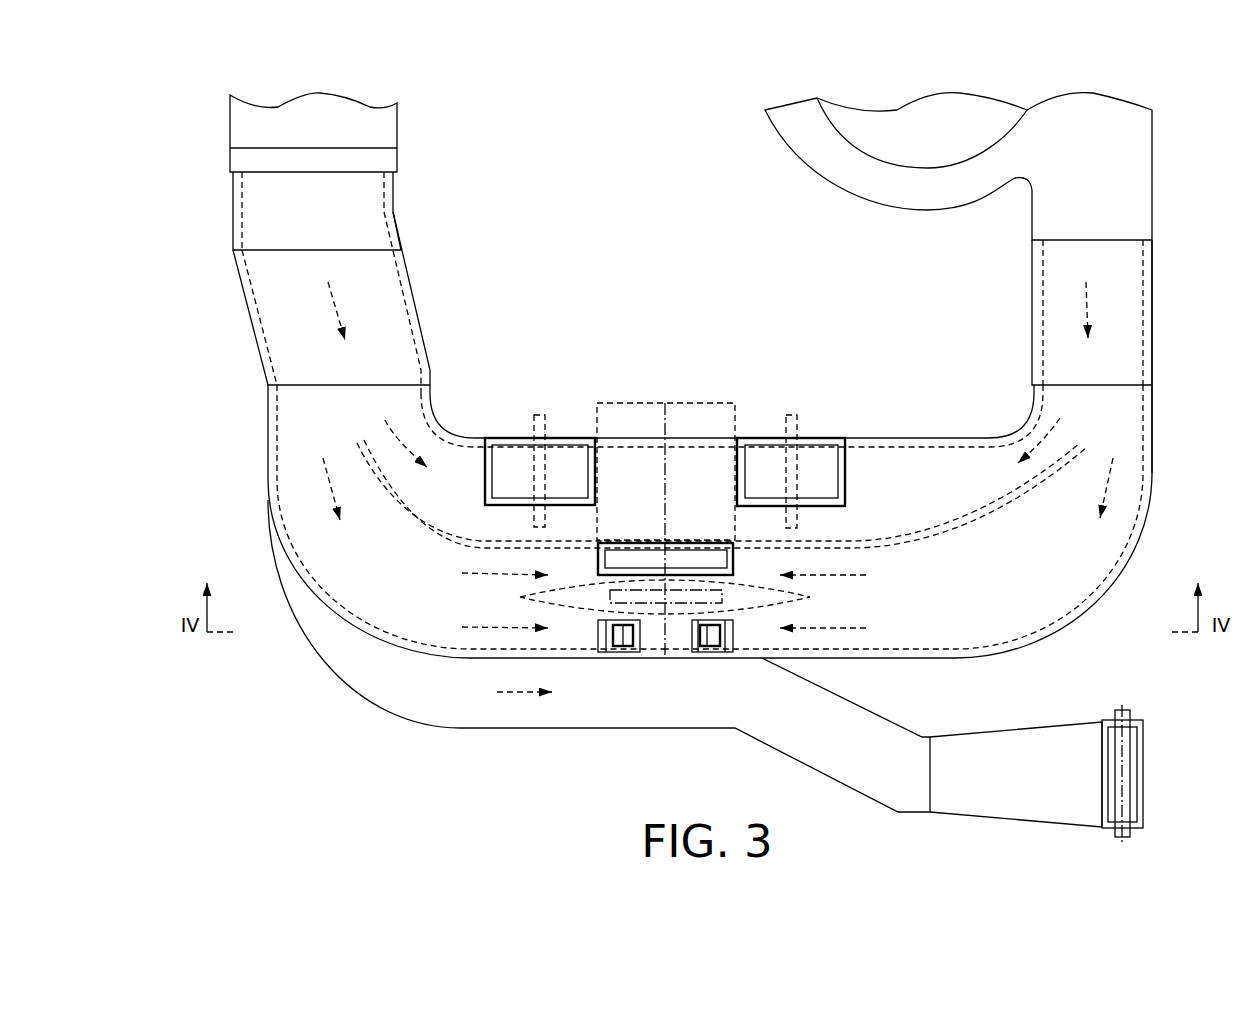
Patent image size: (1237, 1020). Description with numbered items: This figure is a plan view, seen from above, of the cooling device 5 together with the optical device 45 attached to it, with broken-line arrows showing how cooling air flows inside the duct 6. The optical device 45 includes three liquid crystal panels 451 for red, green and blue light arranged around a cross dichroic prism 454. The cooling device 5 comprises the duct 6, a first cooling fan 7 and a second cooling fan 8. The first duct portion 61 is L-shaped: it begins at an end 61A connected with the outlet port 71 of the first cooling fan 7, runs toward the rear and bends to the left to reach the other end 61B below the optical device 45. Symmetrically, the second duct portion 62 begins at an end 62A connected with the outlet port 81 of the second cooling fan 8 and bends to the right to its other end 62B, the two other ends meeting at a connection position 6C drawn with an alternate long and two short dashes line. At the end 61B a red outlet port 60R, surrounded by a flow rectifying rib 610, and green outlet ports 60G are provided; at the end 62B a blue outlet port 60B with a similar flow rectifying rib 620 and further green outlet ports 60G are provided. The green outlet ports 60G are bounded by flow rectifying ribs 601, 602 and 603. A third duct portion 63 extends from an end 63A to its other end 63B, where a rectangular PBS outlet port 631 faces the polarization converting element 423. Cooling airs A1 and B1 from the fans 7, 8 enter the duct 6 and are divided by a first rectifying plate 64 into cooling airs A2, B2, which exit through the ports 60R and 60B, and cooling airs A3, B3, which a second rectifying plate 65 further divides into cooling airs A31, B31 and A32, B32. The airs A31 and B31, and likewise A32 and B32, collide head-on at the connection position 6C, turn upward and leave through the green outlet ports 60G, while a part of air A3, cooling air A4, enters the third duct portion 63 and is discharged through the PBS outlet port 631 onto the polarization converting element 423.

The cooling device 5 is at (638, 140).
The duct 6 is at (450, 735).
The first cooling fan 7 is at (382, 125).
The second cooling fan 8 is at (1137, 122).
The optical device 45 is at (717, 357).
The liquid crystal panels 451 is at (805, 378).
The cross dichroic prism 454 is at (657, 410).
The first duct portion 61 is at (268, 451).
The end 61A is at (388, 203).
The end 61B is at (643, 653).
The second duct portion 62 is at (1128, 547).
The end 62A is at (1148, 242).
The end 62B is at (680, 653).
The third duct portion 63 is at (820, 750).
The outlet duct wall 63A is at (305, 590).
The end 63B is at (1110, 828).
The first rectifying plate 64 is at (935, 545).
The second rectifying plate 65 is at (815, 598).
The outlet port 71 is at (372, 175).
The outlet port 81 is at (1048, 243).
The polarization converting element 423 is at (1132, 713).
The PBS outlet port 631 is at (1135, 802).
The flow rectifying rib 601 is at (598, 634).
The flow rectifying rib 602 is at (733, 636).
The flow rectifying rib 603 is at (735, 560).
The flow rectifying rib 610 is at (517, 505).
The flow rectifying rib 620 is at (822, 503).
The connection position 6C is at (670, 458).
The red outlet port 60R is at (497, 482).
The blue outlet port 60B is at (830, 480).
The green outlet ports 60G is at (624, 653).
The cooling air A1 is at (333, 298).
The cooling air A2 is at (397, 432).
The cooling air A3 is at (338, 472).
The cooling air A4 is at (517, 694).
The cooling air A31 is at (472, 582).
The cooling air A32 is at (462, 628).
The cooling air B1 is at (1092, 302).
The cooling air B2 is at (1062, 427).
The cooling air B3 is at (1112, 475).
The cooling air B31 is at (866, 576).
The cooling air B32 is at (866, 629).